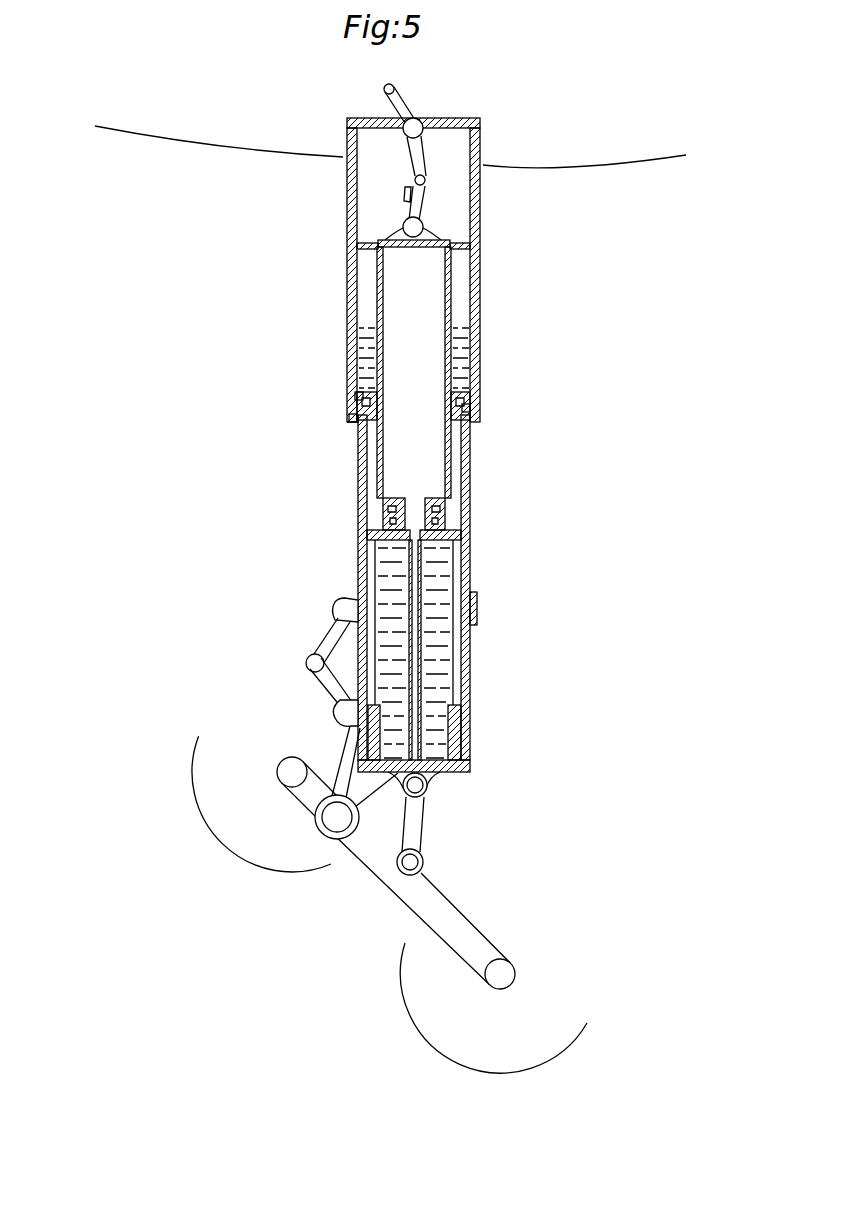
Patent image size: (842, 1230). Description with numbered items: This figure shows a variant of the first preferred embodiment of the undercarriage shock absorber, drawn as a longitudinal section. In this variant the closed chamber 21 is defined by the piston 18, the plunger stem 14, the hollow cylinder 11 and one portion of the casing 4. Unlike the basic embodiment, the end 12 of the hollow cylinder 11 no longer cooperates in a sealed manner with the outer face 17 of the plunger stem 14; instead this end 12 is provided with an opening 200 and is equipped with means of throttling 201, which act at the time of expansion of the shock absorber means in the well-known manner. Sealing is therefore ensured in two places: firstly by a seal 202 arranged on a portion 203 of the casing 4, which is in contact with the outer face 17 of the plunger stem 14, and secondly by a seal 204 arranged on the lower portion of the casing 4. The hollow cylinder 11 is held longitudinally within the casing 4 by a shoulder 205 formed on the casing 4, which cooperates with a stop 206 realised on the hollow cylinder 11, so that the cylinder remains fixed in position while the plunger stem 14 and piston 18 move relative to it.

The casing 4 is at (350, 320).
The hollow cylinder 11 is at (470, 655).
The end of the hollow cylinder 12 is at (366, 392).
The plunger stem 14 is at (466, 342).
The outer face of the plunger stem 17 is at (452, 302).
The piston 18 is at (462, 764).
The closed chamber 21 is at (386, 583).
The opening 200 is at (458, 392).
The means of throttling 201 is at (357, 394).
The seal 202 is at (357, 246).
The portion of the casing 203 is at (452, 250).
The seal 204 is at (476, 612).
The shoulder 205 is at (348, 420).
The stop 206 is at (468, 410).